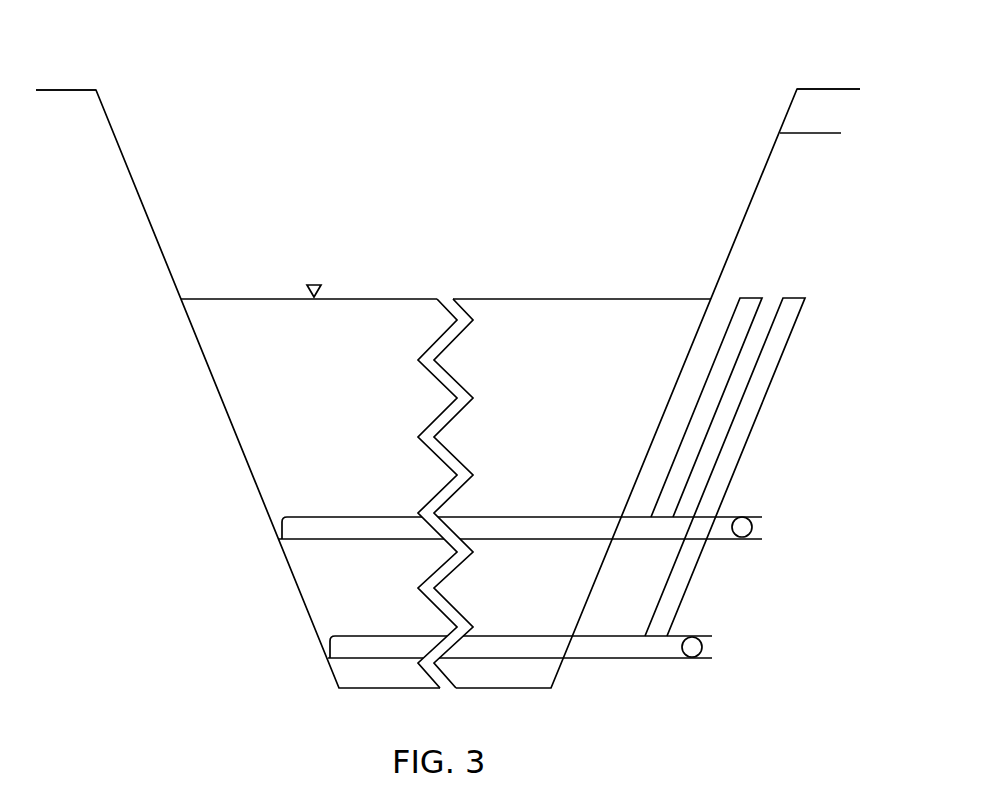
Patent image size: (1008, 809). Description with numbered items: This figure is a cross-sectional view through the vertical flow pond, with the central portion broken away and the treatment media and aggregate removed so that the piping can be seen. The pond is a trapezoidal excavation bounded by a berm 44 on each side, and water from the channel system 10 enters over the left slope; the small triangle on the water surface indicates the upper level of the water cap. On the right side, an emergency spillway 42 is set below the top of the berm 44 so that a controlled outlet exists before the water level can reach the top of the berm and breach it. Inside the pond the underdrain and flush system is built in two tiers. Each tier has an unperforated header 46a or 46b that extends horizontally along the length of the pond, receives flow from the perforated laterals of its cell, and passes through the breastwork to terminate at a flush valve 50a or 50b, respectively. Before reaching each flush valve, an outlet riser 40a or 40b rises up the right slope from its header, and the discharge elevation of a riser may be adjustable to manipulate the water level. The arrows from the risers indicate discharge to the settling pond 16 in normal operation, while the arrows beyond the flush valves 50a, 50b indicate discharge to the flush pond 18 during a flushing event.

The channel system 10 is at (158, 189).
The berm 44 is at (71, 90).
The emergency spillway 42 is at (810, 133).
The outlet riser 40a is at (754, 298).
The outlet riser 40b is at (800, 298).
The settling pond 16 is at (763, 298).
The header 46a is at (640, 527).
The header 46b is at (603, 648).
The flush valve 50a is at (744, 524).
The flush valve 50b is at (695, 643).
The flush pond 18 is at (772, 527).